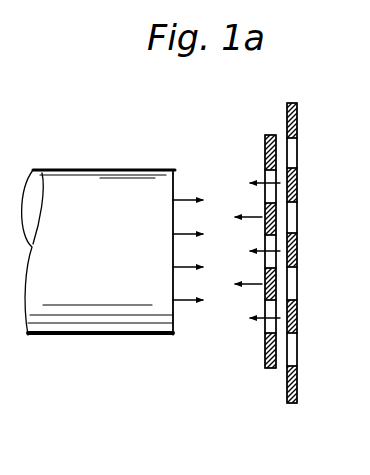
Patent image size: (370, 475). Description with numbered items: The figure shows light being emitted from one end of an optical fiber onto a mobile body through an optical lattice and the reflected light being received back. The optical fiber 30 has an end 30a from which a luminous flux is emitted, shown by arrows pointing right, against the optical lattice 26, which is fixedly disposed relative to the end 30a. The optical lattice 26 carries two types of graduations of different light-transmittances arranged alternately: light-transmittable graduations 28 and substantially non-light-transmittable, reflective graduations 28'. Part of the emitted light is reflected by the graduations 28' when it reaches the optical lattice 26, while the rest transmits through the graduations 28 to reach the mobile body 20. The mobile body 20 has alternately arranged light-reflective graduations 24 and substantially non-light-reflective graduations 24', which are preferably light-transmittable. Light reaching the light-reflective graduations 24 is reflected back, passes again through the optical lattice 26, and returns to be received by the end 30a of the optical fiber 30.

The optical fiber 30 is at (89, 178).
The end of the optical fiber 30a is at (176, 174).
The mobile body 20 is at (300, 117).
The light-reflective graduations 24 is at (322, 253).
The substantially non-light-reflective graduations 24' is at (325, 252).
The optical lattice 26 is at (262, 360).
The light-transmittable graduations 28 is at (240, 280).
The substantially non-light-transmittable, reflective graduations 28' is at (234, 251).